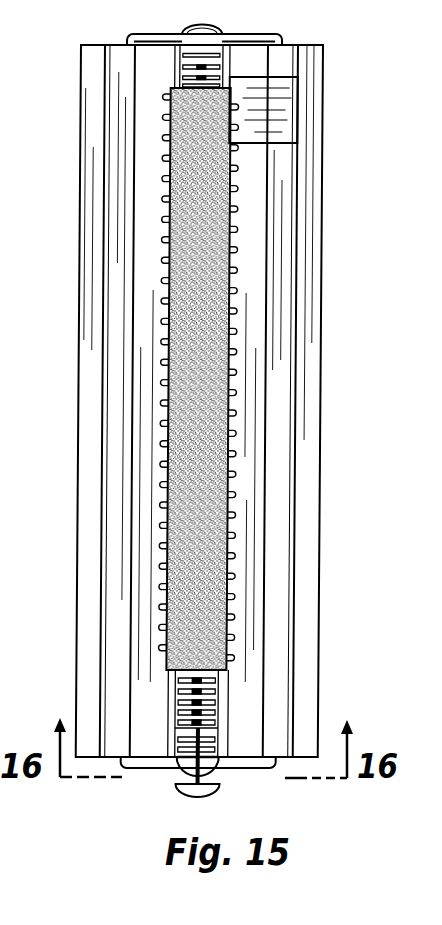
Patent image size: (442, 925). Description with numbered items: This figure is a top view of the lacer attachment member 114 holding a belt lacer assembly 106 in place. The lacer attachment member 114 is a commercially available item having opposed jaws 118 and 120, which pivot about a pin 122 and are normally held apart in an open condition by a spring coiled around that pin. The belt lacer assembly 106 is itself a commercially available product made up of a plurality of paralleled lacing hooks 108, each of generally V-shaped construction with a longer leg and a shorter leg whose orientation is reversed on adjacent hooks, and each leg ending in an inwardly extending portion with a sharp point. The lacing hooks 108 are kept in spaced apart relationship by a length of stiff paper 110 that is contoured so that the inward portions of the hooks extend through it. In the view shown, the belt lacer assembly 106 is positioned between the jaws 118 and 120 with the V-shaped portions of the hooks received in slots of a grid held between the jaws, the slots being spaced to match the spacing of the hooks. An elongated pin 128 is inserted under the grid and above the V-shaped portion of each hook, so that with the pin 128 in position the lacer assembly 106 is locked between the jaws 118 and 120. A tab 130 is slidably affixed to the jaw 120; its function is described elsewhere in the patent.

The belt lacer assembly 106 is at (261, 393).
The lacing hooks 108 is at (237, 273).
The stiff paper 110 is at (210, 325).
The lacer attachment member 114 is at (352, 159).
The jaw 118 is at (82, 589).
The jaw 120 is at (303, 591).
The pin 122 is at (215, 772).
The pin 128 is at (188, 795).
The tab 130 is at (283, 97).